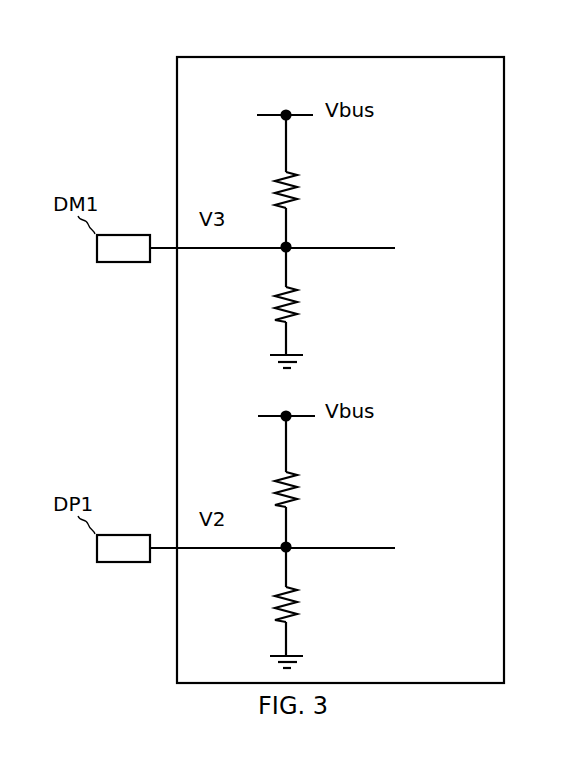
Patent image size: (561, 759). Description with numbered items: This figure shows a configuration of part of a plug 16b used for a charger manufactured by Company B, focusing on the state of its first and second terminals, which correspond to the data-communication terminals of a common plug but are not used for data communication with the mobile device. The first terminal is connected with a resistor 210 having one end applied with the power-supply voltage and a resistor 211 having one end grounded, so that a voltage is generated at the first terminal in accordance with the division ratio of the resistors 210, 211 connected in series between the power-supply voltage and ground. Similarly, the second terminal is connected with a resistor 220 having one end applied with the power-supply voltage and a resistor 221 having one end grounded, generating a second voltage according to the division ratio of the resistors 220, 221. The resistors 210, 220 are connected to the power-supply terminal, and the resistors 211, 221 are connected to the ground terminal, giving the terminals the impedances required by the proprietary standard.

The plug 16b is at (450, 57).
The resistor 220 is at (277, 174).
The resistor 221 is at (298, 306).
The resistor 210 is at (278, 474).
The resistor 211 is at (298, 606).